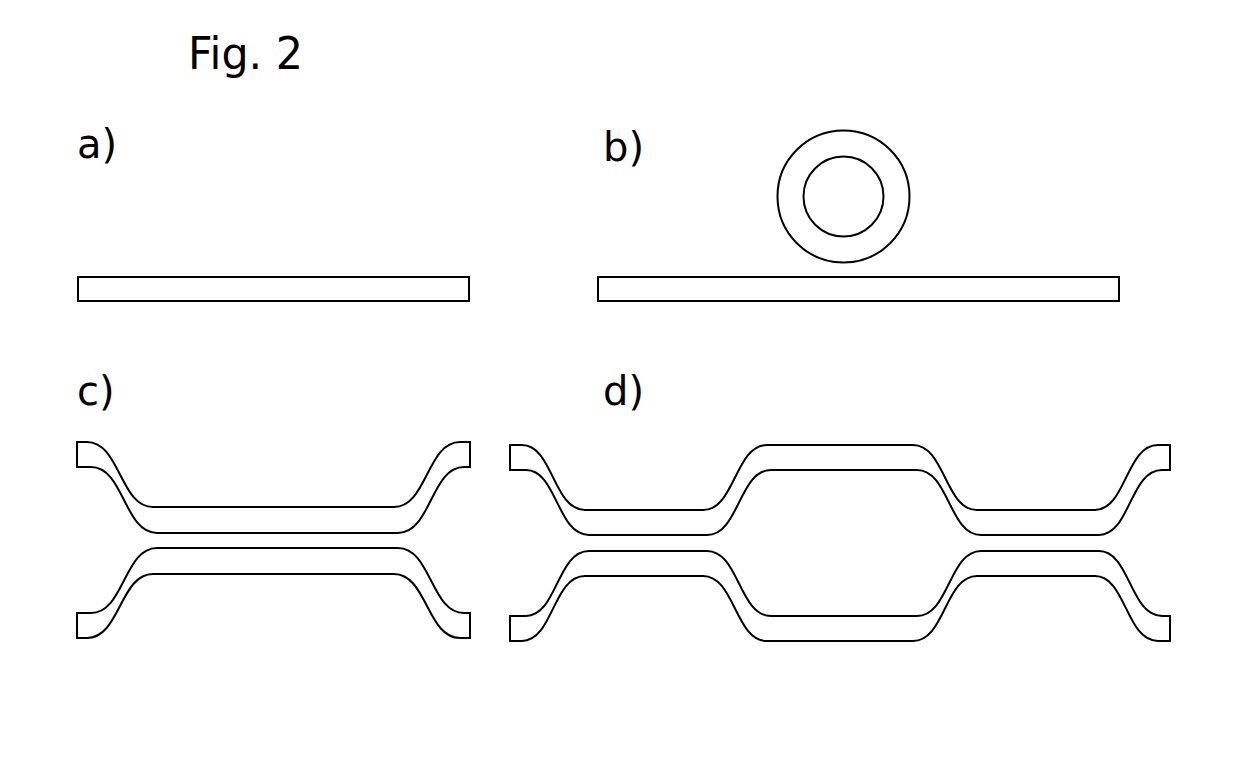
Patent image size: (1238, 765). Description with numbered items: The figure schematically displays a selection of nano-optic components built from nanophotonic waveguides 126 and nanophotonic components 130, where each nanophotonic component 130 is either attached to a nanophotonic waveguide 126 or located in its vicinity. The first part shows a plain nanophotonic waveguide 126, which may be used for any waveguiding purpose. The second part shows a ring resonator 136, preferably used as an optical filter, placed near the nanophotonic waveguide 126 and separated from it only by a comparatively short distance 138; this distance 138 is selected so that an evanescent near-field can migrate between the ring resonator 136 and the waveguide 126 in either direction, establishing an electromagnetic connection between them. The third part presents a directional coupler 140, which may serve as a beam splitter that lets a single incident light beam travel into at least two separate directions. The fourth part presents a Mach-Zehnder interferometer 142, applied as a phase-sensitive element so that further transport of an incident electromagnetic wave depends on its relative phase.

The nanophotonic waveguide 126 is at (247, 287).
The nanophotonic component 130 is at (623, 378).
The ring resonator 136 is at (882, 162).
The distance 138 is at (840, 272).
The directional coupler 140 is at (255, 518).
The Mach-Zehnder interferometer 142 is at (647, 518).